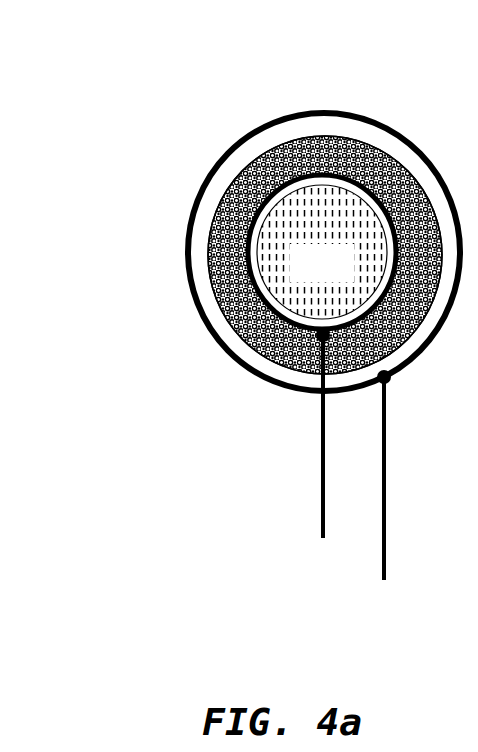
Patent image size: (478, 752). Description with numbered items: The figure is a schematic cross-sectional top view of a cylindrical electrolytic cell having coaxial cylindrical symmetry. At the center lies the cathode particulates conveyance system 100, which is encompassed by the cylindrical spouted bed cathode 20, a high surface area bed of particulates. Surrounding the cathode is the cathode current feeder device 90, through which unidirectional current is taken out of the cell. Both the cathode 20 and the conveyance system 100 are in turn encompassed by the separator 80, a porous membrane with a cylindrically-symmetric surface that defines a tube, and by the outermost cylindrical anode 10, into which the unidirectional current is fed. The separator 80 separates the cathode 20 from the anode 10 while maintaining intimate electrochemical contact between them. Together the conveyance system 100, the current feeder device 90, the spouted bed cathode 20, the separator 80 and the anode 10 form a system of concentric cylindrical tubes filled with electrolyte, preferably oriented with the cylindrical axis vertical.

The anode 10 is at (208, 170).
The cathode 20 is at (232, 261).
The separator 80 is at (321, 134).
The cathode current feeder device 90 is at (275, 330).
The cathode particulates conveyance system 100 is at (292, 278).